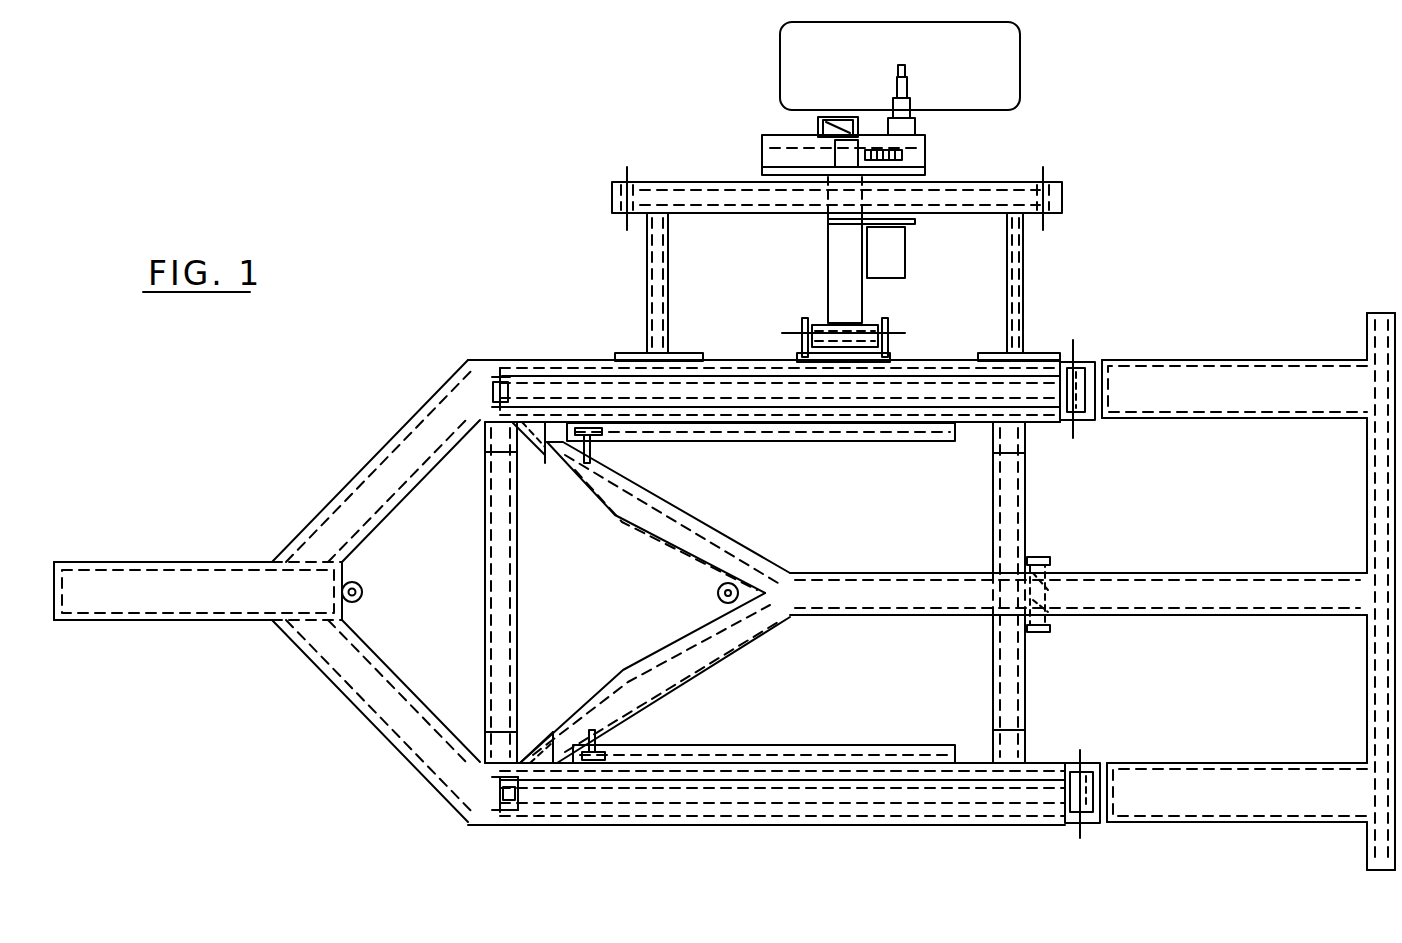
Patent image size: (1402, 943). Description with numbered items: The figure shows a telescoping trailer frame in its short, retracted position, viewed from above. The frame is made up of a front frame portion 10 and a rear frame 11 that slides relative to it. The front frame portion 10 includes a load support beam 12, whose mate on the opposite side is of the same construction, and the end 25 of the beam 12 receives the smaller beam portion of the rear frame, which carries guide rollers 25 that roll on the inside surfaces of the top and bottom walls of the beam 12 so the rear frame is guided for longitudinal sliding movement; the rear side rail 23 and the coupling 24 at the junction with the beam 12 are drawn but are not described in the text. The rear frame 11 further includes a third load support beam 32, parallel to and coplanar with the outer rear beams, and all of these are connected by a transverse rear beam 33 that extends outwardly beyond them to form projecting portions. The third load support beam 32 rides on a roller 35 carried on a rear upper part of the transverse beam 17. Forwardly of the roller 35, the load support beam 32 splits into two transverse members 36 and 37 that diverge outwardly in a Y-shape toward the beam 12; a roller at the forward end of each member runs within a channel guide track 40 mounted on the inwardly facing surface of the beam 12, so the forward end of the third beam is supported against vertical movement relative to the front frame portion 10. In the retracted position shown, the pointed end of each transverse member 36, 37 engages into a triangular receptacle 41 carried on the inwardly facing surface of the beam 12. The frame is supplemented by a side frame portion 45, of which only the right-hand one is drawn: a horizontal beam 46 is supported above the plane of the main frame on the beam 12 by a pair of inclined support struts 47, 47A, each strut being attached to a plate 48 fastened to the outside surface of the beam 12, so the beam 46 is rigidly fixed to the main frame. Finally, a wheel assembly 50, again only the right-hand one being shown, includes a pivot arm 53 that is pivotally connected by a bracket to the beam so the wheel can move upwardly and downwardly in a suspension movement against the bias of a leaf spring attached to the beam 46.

The front frame portion 10 is at (300, 518).
The rear frame 11 is at (1225, 335).
The load support beam 12 is at (560, 357).
The transverse beam 17 is at (1036, 708).
The side rail 23 is at (1197, 425).
The coupler 24 is at (1102, 425).
The guide roller 25 is at (484, 372).
The third load support beam 32 is at (1183, 540).
The transverse rear beam 33 is at (1360, 538).
The roller 35 is at (1050, 592).
The transverse member 36 is at (717, 523).
The transverse member 37 is at (624, 668).
The channel guide track 40 is at (797, 444).
The triangular receptacle 41 is at (532, 735).
The side frame portion 45 is at (835, 235).
The horizontal beam 46 is at (652, 178).
The inclined support strut 47 is at (1025, 284).
The inclined support strut 47A is at (668, 268).
The plate 48 is at (677, 350).
The wheel assembly 50 is at (962, 153).
The pivot arm 53 is at (862, 303).